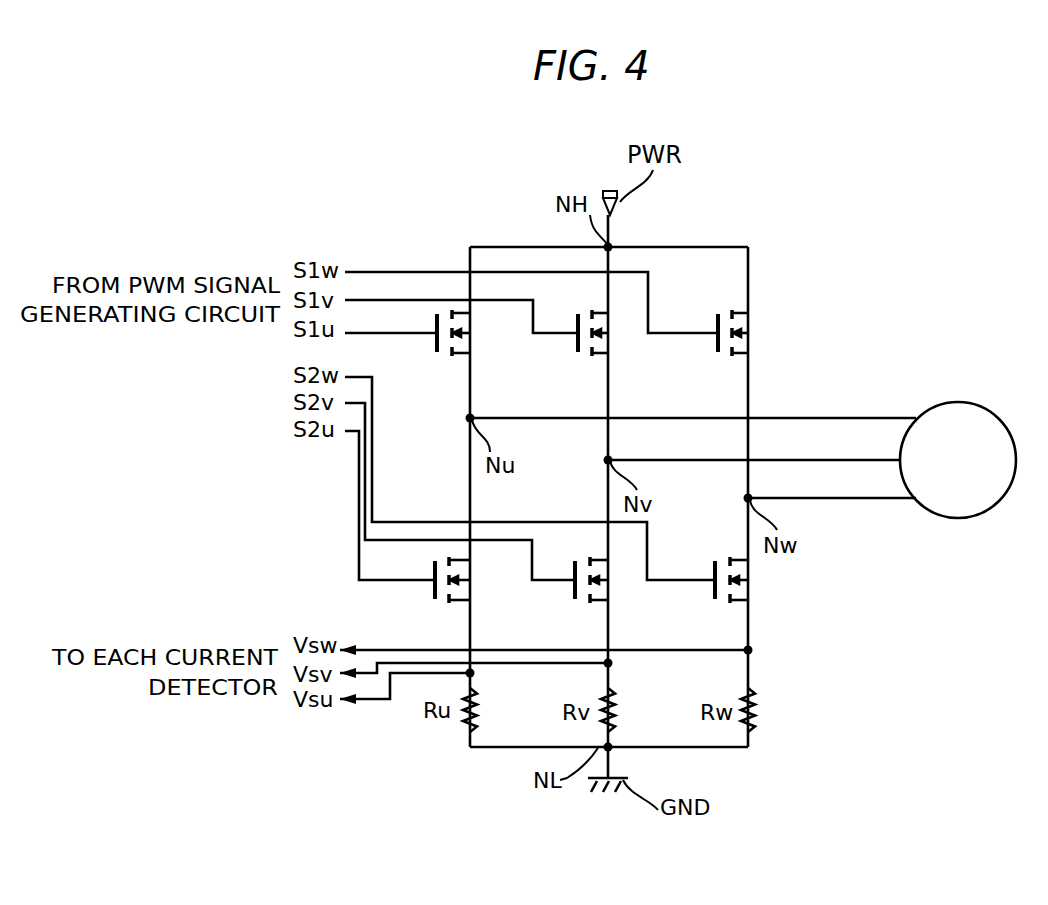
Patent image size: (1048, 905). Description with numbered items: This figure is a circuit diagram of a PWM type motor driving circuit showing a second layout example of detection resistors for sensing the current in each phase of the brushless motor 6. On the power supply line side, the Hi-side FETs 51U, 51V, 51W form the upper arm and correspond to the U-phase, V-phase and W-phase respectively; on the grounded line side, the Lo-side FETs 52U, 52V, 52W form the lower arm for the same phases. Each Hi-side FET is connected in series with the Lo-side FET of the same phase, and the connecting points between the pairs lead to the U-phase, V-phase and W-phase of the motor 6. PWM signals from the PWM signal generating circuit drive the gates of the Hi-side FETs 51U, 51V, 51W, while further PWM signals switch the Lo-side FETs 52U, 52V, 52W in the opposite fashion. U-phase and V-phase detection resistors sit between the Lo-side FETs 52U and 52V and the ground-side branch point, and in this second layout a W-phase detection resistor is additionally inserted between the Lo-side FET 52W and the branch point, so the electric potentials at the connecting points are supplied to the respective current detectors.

The Hi-side FET 51U is at (436, 365).
The Hi-side FET 51V is at (570, 342).
The Hi-side FET 51W is at (708, 342).
The Lo-side FET 52U is at (424, 589).
The Lo-side FET 52V is at (566, 591).
The Lo-side FET 52W is at (706, 591).
The brushless motor 6 is at (957, 518).